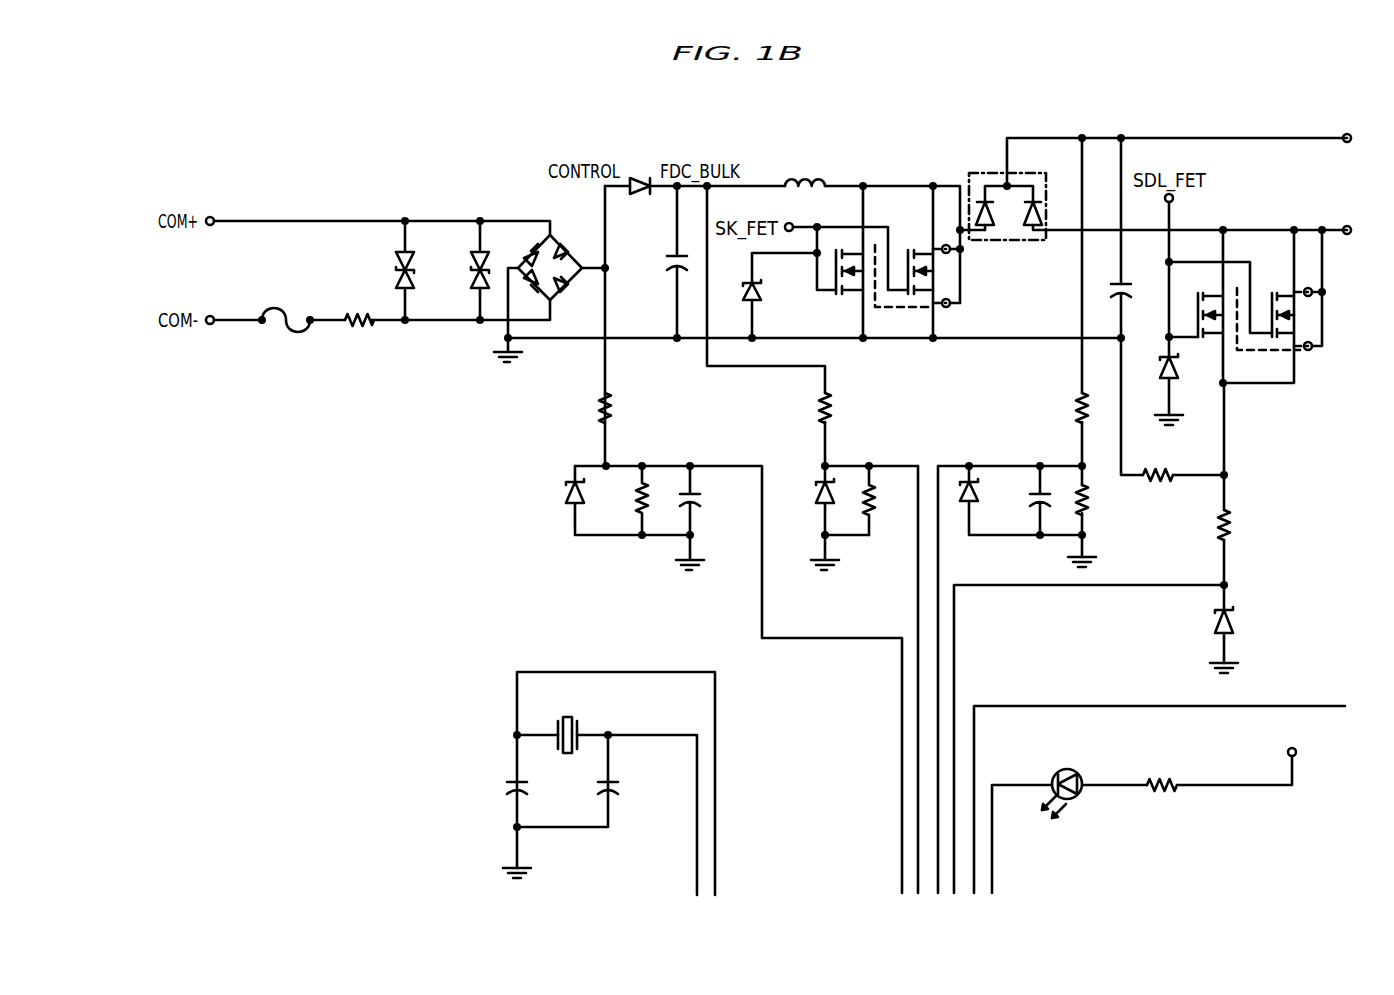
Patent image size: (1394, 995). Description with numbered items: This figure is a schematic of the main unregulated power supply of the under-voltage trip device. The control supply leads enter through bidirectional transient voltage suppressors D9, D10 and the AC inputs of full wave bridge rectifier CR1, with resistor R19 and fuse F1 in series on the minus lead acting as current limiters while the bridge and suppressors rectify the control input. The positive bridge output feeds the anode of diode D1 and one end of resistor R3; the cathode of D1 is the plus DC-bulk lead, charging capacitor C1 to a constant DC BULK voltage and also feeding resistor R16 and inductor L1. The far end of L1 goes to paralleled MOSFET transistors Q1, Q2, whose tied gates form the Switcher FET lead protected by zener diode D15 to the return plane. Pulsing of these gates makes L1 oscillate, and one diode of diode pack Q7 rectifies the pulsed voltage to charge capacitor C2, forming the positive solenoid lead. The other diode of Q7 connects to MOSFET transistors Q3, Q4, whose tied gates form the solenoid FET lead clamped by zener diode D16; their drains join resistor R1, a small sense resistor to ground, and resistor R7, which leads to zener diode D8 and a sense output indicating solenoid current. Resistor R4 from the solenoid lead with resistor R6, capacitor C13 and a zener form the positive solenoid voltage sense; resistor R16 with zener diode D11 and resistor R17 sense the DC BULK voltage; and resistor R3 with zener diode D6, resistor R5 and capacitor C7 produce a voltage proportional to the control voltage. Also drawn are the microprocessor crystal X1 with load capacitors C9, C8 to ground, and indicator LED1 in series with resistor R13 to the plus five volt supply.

The fuse F1 is at (286, 307).
The resistor R19 is at (355, 304).
The bidirectional transient voltage suppressor D9 is at (391, 270).
The bidirectional transient voltage suppressor D10 is at (462, 270).
The full wave bridge rectifier CR1 is at (550, 255).
The diode D1 is at (640, 200).
The capacitor C1 is at (664, 254).
The inductor L1 is at (805, 167).
The zener diode D15 is at (771, 292).
The MOSFET transistor Q1 is at (849, 247).
The MOSFET transistor Q2 is at (912, 263).
The diode pack Q7 is at (1007, 195).
The capacitor C2 is at (1136, 283).
The MOSFET transistor Q3 is at (1210, 301).
The MOSFET transistor Q4 is at (1274, 307).
The zener diode D16 is at (1189, 366).
The resistor R3 is at (589, 408).
The resistor R16 is at (804, 408).
The resistor R4 is at (1066, 408).
The zener diode D6 is at (588, 500).
The resistor R5 is at (627, 500).
The capacitor C7 is at (689, 500).
The zener diode D11 is at (823, 500).
The resistor R17 is at (888, 500).
The capacitor C13 is at (1021, 500).
The resistor R6 is at (1098, 500).
The resistor R1 is at (1158, 461).
The resistor R7 is at (1239, 525).
The zener diode D8 is at (1211, 620).
The crystal X1 is at (567, 721).
The capacitor C9 is at (499, 786).
The capacitor C8 is at (627, 786).
The LED LED1 is at (1066, 780).
The resistor R13 is at (1162, 768).